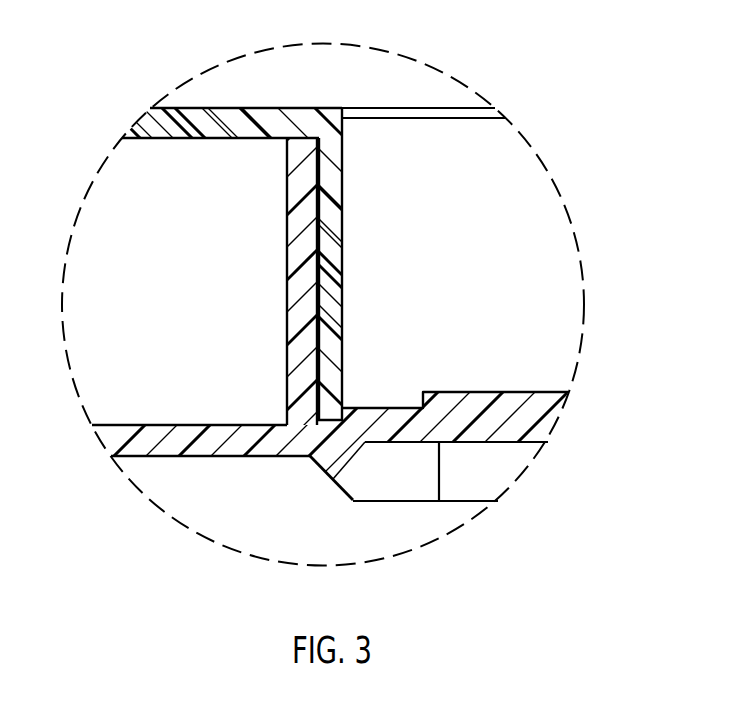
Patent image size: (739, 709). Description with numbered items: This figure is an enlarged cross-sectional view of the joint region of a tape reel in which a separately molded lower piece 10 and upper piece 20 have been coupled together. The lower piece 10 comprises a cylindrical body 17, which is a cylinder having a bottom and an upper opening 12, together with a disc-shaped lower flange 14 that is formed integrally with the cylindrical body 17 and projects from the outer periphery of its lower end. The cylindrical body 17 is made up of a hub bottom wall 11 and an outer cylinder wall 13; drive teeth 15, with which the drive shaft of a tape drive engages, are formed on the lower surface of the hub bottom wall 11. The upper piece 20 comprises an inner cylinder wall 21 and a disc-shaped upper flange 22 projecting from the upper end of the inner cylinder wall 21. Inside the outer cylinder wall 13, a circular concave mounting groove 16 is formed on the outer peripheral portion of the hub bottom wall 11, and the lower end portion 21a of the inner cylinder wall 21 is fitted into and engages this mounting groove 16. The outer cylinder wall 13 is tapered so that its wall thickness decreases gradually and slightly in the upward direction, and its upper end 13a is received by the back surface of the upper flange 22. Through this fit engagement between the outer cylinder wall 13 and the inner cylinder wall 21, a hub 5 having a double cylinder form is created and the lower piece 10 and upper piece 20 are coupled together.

The hub 5 is at (180, 230).
The lower piece 10 is at (345, 477).
The hub bottom wall 11 is at (537, 392).
The upper opening 12 is at (430, 143).
The outer cylinder wall 13 is at (287, 258).
The upper end of the outer cylinder wall 13a is at (287, 140).
The lower flange 14 is at (185, 456).
The drive teeth 15 is at (393, 472).
The mounting groove 16 is at (325, 440).
The cylindrical body 17 is at (253, 316).
The upper piece 20 is at (342, 232).
The inner cylinder wall 21 is at (342, 257).
The lower end portion of the inner cylinder wall 21a is at (334, 421).
The upper flange 22 is at (222, 108).